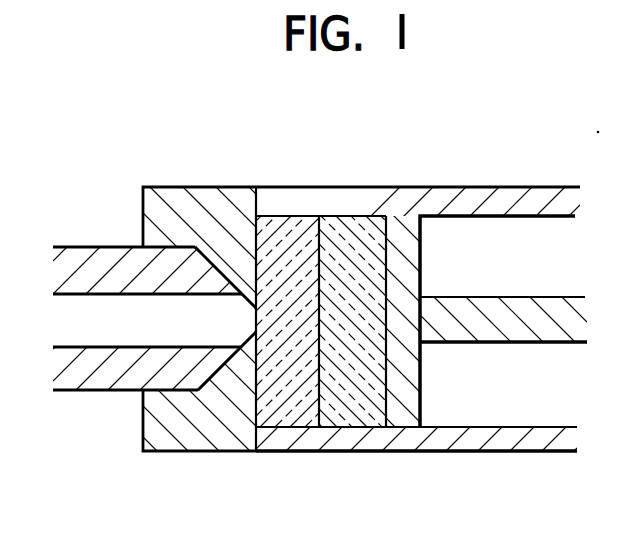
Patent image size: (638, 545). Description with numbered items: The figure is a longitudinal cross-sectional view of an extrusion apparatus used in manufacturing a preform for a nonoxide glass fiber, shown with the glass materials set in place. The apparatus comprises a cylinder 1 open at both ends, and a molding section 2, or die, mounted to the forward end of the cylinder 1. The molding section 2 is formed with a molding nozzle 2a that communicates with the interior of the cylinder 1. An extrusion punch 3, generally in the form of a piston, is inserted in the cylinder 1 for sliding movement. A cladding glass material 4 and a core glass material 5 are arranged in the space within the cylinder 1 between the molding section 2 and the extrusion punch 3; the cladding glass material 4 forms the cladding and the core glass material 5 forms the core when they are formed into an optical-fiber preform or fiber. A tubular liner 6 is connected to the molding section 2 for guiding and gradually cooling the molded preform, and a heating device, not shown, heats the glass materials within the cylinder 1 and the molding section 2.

The cylinder 1 is at (536, 440).
The molding section (die) 2 is at (193, 220).
The molding nozzle 2a is at (254, 320).
The extrusion punch 3 is at (405, 240).
The cladding glass material 4 is at (290, 245).
The core glass material 5 is at (365, 238).
The tubular liner 6 is at (105, 262).